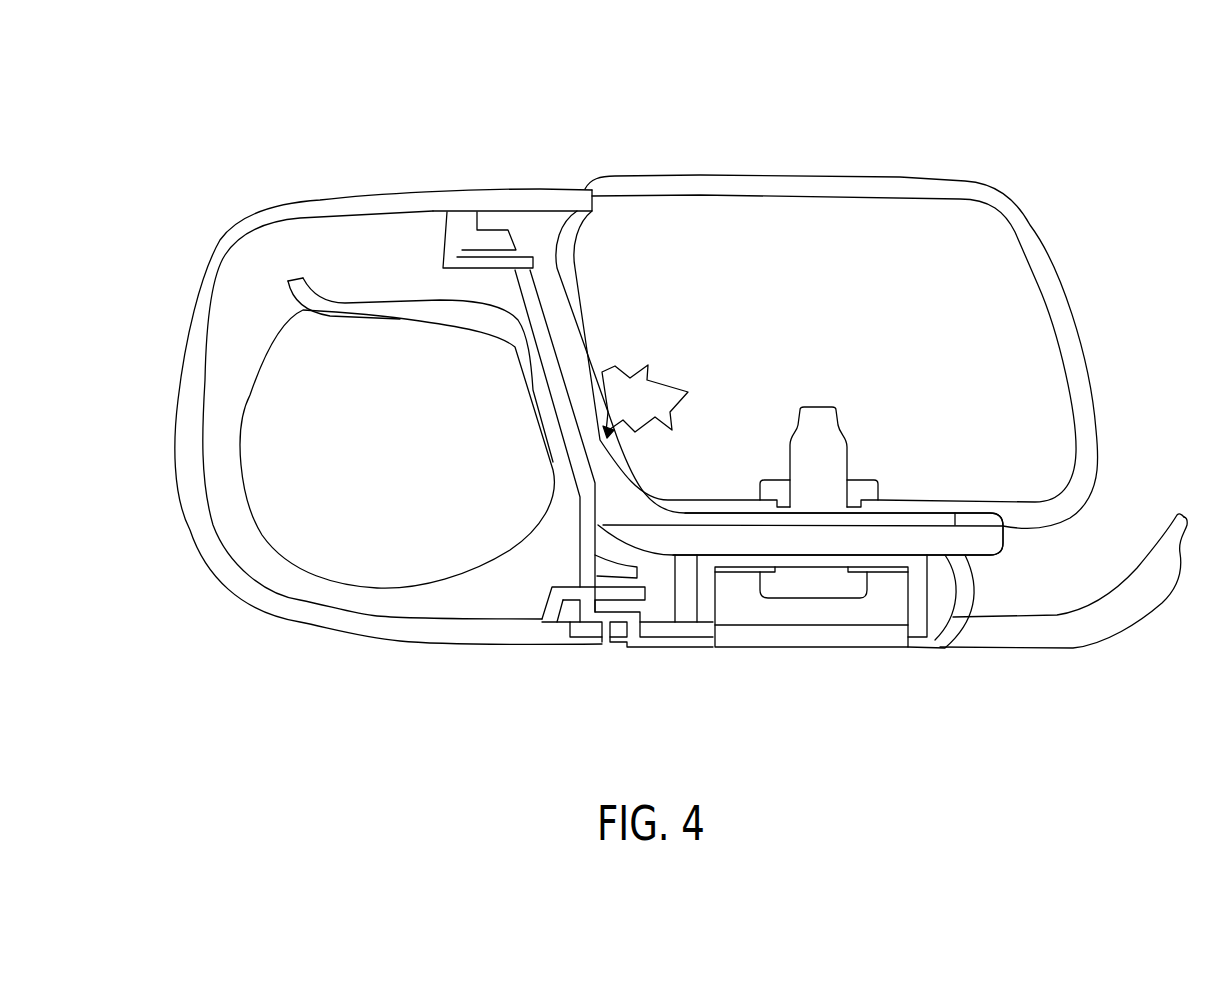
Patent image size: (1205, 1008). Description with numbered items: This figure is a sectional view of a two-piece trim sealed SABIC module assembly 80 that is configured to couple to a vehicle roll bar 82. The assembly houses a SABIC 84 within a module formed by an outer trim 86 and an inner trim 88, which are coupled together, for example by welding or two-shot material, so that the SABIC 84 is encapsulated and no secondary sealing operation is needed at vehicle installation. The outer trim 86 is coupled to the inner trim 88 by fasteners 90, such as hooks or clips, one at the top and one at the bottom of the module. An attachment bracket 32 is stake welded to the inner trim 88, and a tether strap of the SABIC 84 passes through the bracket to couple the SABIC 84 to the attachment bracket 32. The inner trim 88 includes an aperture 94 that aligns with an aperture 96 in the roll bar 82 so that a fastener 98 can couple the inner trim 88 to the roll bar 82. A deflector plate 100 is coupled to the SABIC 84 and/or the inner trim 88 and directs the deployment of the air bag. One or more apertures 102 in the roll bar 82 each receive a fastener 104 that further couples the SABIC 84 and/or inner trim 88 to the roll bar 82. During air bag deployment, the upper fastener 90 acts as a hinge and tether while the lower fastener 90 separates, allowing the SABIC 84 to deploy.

The SABIC module assembly 80 is at (170, 160).
The vehicle roll bar 82 is at (1085, 442).
The SABIC 84 is at (290, 391).
The outer trim 86 is at (205, 347).
The inner trim 88 is at (684, 648).
The fasteners 90 is at (486, 168).
The aperture 94 is at (890, 562).
The aperture 96 is at (843, 507).
The fastener 98 is at (823, 437).
The deflector plate 100 is at (375, 308).
The apertures 102 is at (607, 431).
The fastener 104 is at (660, 388).
The attachment bracket 32 is at (567, 360).